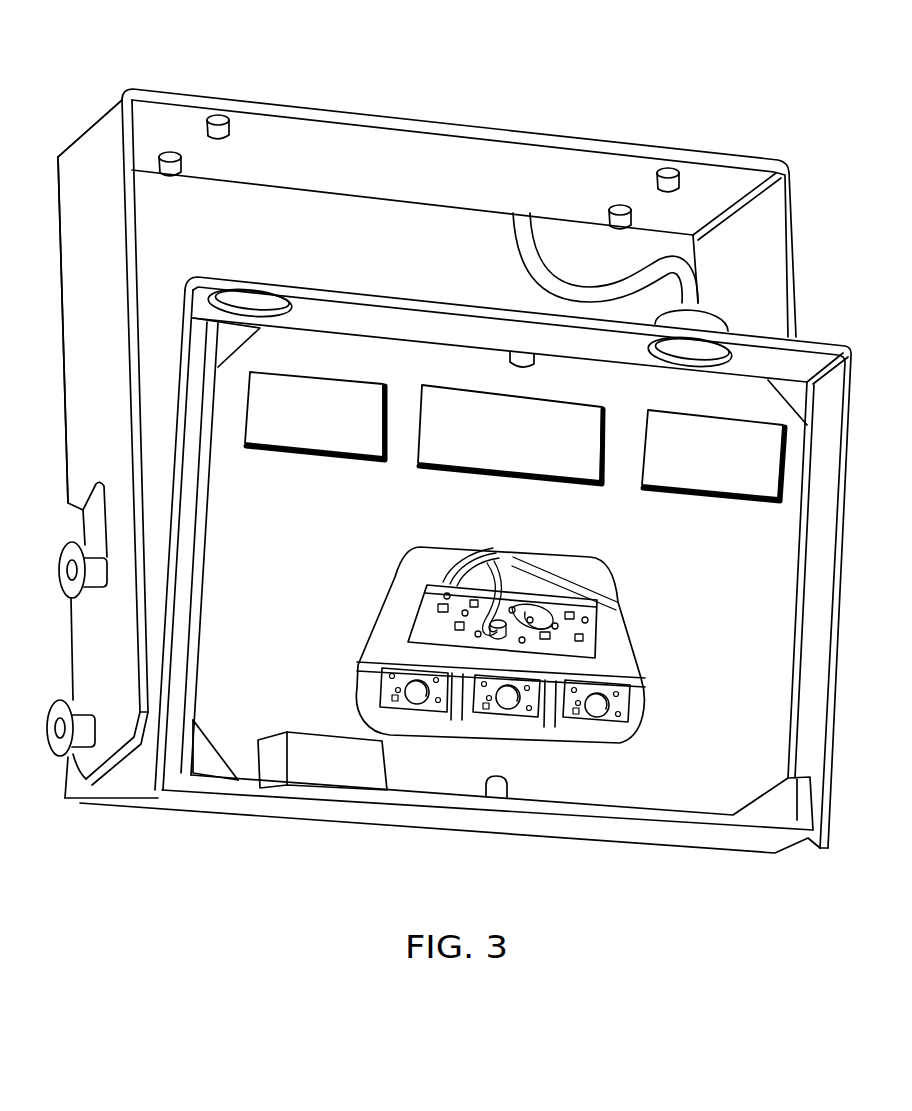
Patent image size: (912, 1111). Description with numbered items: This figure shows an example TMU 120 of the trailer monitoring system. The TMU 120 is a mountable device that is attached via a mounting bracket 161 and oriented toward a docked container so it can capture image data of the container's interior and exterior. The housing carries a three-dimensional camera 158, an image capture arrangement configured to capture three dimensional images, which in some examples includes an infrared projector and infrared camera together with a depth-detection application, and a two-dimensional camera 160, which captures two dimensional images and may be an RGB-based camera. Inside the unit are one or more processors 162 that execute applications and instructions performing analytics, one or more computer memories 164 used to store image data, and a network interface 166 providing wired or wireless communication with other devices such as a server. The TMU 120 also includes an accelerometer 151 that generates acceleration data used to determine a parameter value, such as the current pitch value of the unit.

The TMU 120 is at (127, 45).
The mounting bracket 161 is at (80, 264).
The processors 162 is at (312, 459).
The computer memories 164 is at (507, 482).
The network interface 166 is at (712, 499).
The 2D camera 160 is at (598, 716).
The 3D camera 158 is at (410, 697).
The accelerometer 151 is at (313, 762).